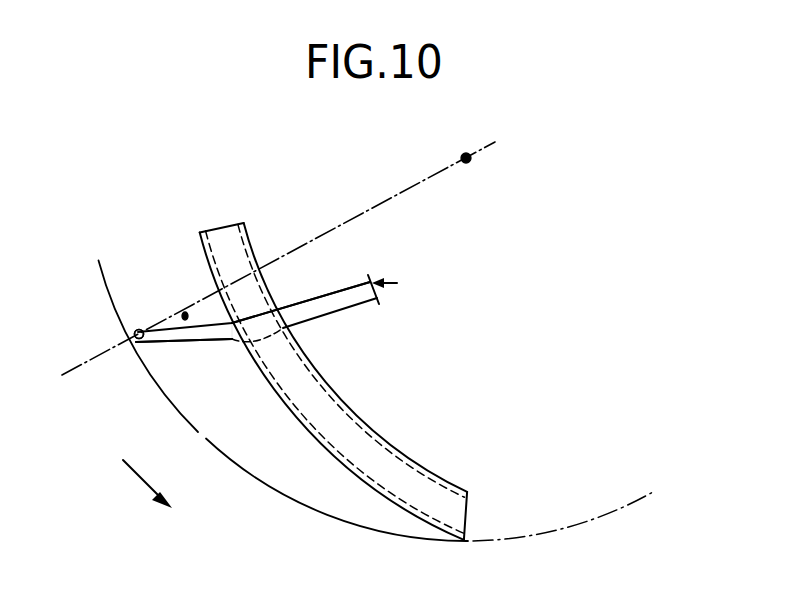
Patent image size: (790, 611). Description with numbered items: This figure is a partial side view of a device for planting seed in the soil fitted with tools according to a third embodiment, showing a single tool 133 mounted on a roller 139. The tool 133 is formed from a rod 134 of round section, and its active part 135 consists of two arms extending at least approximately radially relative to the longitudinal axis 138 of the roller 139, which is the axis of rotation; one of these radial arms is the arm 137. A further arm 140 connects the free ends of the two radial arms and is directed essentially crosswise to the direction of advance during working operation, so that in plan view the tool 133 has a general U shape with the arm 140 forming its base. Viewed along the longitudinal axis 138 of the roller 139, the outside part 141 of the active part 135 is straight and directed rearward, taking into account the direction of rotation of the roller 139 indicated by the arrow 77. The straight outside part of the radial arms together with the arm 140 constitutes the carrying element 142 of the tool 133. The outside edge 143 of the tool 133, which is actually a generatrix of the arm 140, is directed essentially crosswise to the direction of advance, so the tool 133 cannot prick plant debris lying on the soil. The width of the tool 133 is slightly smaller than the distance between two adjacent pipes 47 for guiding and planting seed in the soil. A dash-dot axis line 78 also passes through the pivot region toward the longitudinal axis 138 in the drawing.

The pipes for guiding and planting seed in the soil 47 is at (322, 425).
The arrow 77 is at (134, 470).
The axis line 78 is at (383, 207).
The tool 133 is at (403, 285).
The rod 134 is at (326, 316).
The active part 135 is at (318, 302).
The arm 137 is at (232, 340).
The longitudinal axis 138 is at (468, 151).
The roller 139 is at (266, 484).
The arm 140 is at (146, 328).
The outside part 141 is at (179, 343).
The carrying element 142 is at (185, 326).
The outside edge 143 is at (133, 337).